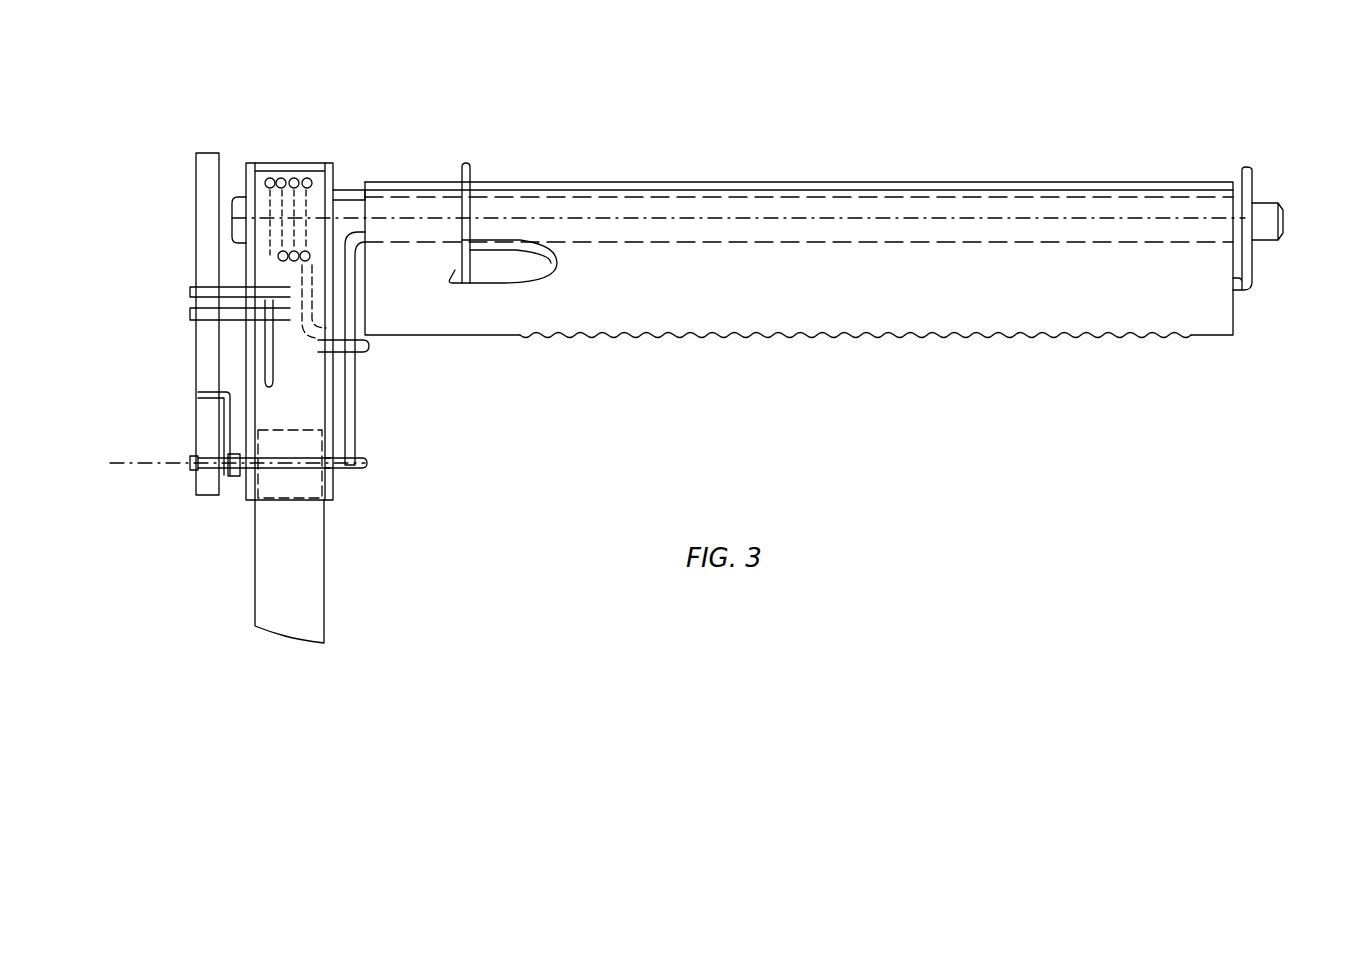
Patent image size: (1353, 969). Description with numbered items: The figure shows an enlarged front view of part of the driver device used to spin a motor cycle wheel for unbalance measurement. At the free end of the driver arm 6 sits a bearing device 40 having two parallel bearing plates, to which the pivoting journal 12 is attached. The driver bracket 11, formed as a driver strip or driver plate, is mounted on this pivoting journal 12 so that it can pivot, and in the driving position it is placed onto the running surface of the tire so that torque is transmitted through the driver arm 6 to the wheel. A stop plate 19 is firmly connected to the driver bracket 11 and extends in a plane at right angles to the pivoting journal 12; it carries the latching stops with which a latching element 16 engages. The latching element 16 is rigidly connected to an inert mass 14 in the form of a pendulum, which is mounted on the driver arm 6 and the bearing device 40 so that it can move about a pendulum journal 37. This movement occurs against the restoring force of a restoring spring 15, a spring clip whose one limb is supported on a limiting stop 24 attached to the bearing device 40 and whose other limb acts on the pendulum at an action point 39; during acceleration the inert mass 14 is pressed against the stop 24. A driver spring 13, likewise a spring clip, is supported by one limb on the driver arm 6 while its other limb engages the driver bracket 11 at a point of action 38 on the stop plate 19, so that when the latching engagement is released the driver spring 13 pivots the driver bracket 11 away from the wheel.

The driver arm 6 is at (311, 603).
The driver bracket 11 is at (960, 303).
The pivoting journal 12 is at (1268, 222).
The driver spring 13 is at (266, 272).
The inert mass 14 is at (206, 190).
The restoring spring 15 is at (234, 478).
The latching element 16 is at (363, 468).
The stop plate 19 is at (353, 425).
The stop 24 is at (228, 316).
The pendulum journal 37 is at (195, 467).
The point of action 38 is at (362, 352).
The action point 39 is at (200, 394).
The bearing device 40 is at (328, 172).